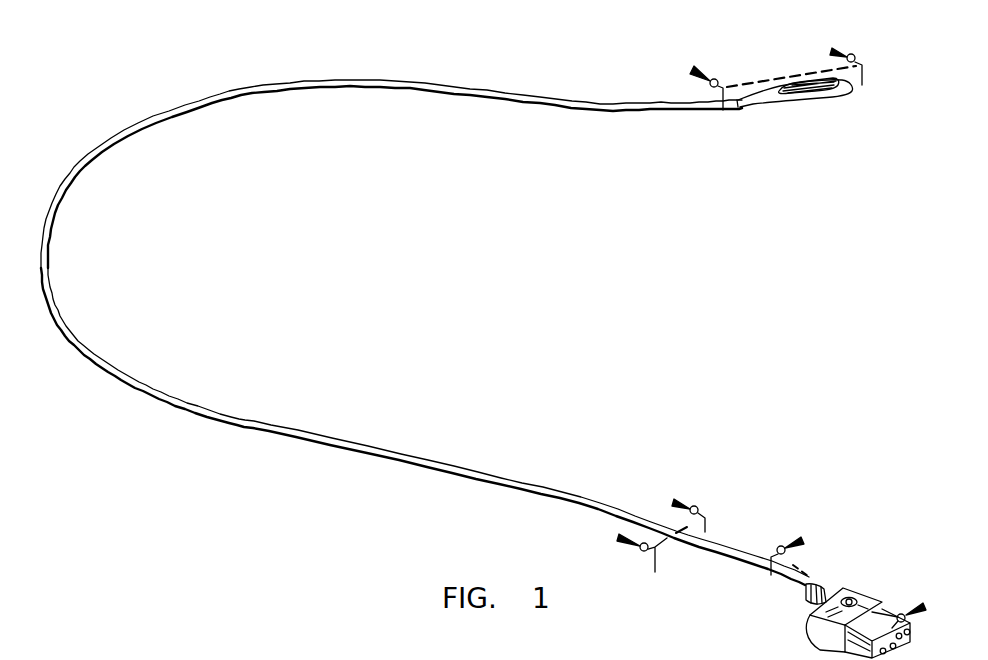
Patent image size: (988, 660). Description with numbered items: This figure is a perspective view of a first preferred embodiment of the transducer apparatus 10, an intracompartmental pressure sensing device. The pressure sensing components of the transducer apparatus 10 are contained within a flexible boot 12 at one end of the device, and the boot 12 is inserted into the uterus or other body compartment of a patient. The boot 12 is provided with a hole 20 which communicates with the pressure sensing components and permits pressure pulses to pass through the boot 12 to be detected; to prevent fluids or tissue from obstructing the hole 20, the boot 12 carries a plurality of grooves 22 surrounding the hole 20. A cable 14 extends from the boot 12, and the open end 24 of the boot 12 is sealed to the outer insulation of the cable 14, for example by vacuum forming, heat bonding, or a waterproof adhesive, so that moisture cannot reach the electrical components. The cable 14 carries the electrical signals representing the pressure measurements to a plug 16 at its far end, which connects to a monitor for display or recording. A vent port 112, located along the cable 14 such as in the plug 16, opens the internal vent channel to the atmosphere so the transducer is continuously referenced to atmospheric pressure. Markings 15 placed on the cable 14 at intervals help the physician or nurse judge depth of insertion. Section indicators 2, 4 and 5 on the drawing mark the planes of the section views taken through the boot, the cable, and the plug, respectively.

The transducer apparatus 10 is at (160, 64).
The flexible boot 12 is at (848, 98).
The cable 14 is at (61, 206).
The markings 15 is at (351, 83).
The plug 16 is at (853, 592).
The hole 20 is at (822, 91).
The grooves 22 is at (800, 89).
The open end 24 is at (752, 104).
The vent port 112 is at (808, 620).
The section line 2- 2 is at (767, 73).
The section line 4- 4 is at (650, 529).
The section line 5- 5 is at (858, 574).